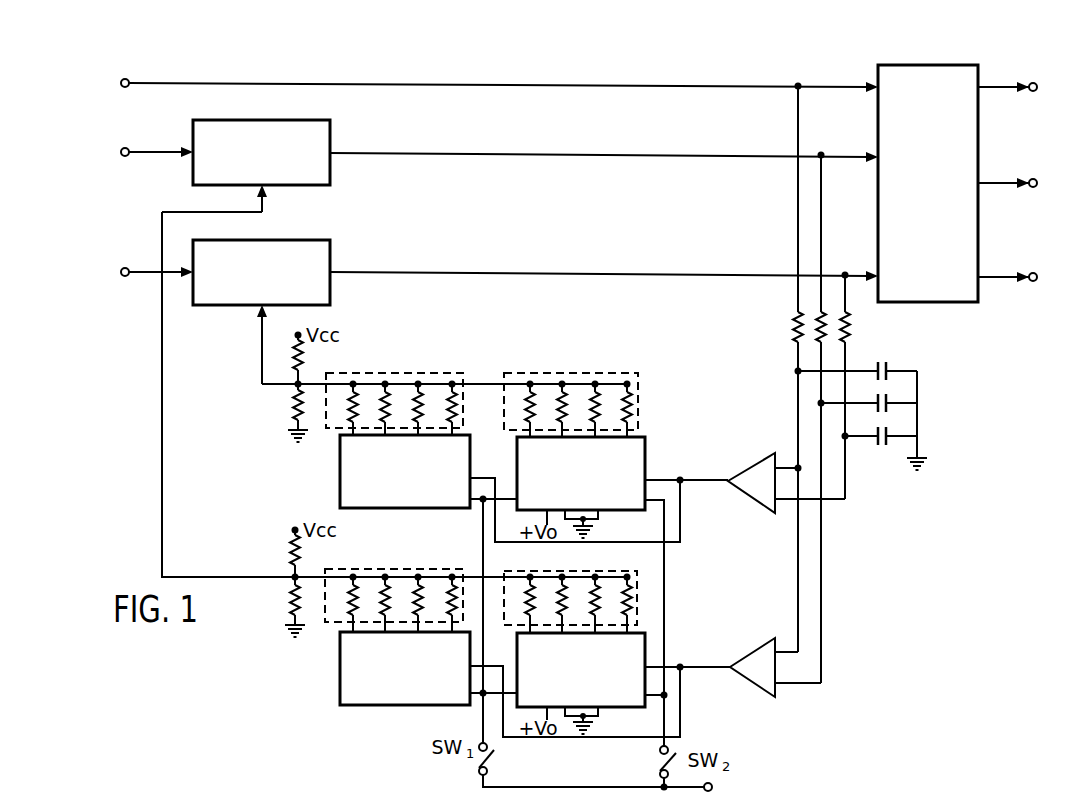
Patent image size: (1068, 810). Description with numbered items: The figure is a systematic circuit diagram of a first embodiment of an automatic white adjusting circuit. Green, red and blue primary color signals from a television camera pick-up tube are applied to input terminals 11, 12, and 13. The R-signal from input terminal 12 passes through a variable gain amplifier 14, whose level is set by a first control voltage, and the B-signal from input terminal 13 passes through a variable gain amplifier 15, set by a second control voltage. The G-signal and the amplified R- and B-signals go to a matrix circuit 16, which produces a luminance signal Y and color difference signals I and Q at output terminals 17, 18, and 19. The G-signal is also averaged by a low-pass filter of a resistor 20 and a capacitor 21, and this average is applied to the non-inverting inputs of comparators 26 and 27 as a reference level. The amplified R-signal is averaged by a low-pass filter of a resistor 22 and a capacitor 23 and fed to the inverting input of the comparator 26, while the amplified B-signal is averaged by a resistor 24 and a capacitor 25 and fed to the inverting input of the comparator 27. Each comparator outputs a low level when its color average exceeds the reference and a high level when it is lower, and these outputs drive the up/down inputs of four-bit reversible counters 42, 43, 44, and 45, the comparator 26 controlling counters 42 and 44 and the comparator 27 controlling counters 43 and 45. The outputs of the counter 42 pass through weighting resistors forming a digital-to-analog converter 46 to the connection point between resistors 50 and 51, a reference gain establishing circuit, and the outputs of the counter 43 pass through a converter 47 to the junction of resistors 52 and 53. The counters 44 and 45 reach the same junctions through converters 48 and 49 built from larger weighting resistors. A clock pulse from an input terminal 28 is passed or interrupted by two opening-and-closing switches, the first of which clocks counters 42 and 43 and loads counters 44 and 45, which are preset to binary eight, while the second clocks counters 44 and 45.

The input terminal 11 is at (126, 88).
The input terminal 12 is at (126, 157).
The input terminal 13 is at (126, 277).
The variable gain amplifier 14 is at (263, 120).
The variable gain amplifier 15 is at (282, 240).
The matrix circuit 16 is at (878, 120).
The output terminal 17 is at (1032, 92).
The output terminal 18 is at (1032, 188).
The output terminal 19 is at (1032, 282).
The resistor 20 is at (793, 328).
The capacitor 21 is at (887, 366).
The resistor 22 is at (816, 316).
The capacitor 23 is at (880, 400).
The resistor 24 is at (850, 328).
The capacitor 25 is at (880, 445).
The comparator 26 is at (752, 655).
The comparator 27 is at (752, 498).
The input terminal 28 is at (712, 787).
The reversible counter 42 is at (380, 705).
The reversible counter 43 is at (340, 470).
The reversible counter 44 is at (614, 707).
The reversible counter 45 is at (645, 458).
The digital-to-analog converter 46 is at (357, 569).
The digital-to-analog converter 47 is at (363, 373).
The digital-to-analog converter 48 is at (637, 576).
The digital-to-analog converter 49 is at (540, 373).
The resistor 50 is at (291, 558).
The resistor 51 is at (290, 600).
The resistor 52 is at (295, 360).
The resistor 53 is at (293, 408).